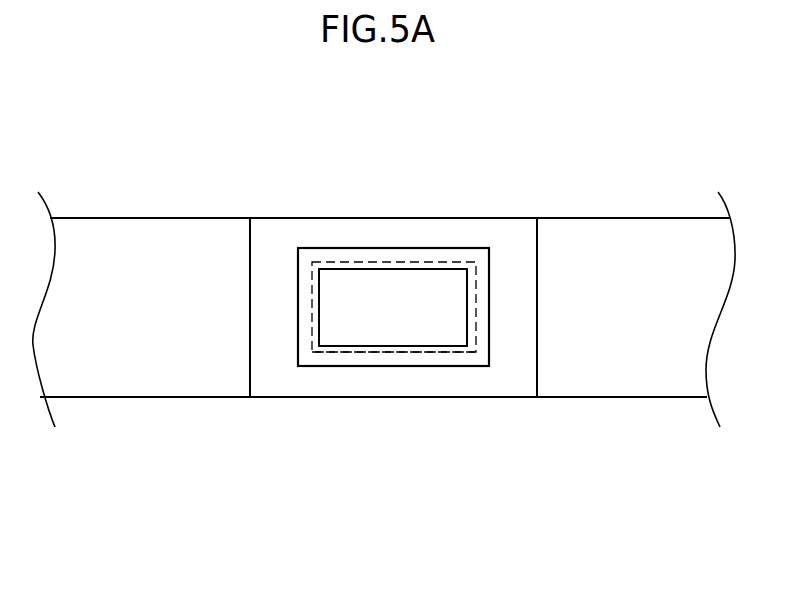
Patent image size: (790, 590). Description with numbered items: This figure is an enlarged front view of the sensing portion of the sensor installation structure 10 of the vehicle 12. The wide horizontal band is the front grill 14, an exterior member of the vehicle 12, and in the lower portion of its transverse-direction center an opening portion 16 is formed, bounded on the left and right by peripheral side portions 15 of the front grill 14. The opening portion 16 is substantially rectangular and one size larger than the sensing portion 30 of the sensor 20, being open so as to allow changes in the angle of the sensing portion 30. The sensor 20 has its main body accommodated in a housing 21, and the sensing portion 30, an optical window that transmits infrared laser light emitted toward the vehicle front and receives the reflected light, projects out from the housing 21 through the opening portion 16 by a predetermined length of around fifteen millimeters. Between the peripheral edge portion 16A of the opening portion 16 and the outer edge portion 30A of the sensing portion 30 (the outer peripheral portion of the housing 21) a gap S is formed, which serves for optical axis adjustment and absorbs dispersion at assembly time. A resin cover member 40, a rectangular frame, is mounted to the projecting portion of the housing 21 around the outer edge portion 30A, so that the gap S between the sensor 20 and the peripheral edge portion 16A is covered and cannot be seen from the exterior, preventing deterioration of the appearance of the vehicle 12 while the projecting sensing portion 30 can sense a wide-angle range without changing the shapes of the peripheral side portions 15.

The sensor installation structure 10 is at (442, 311).
The vehicle 12 is at (145, 186).
The front grill 14 is at (155, 363).
The peripheral side portions 15 is at (298, 228).
The opening portion 16 is at (458, 270).
The peripheral edge portion 16A is at (452, 338).
The sensor 20 is at (355, 283).
The housing 21 is at (404, 267).
The sensing portion 30 is at (398, 320).
The outer edge portion 30A is at (392, 420).
The cover member 40 is at (489, 248).
The gap S is at (323, 350).